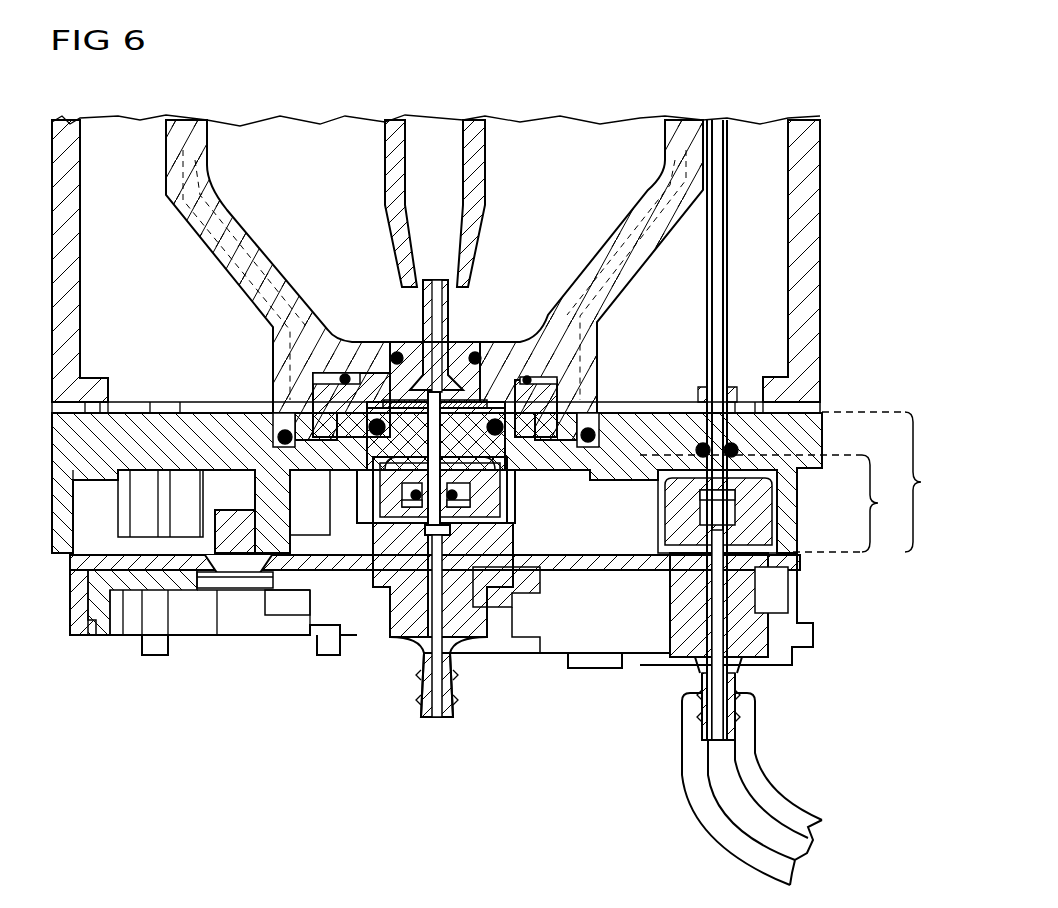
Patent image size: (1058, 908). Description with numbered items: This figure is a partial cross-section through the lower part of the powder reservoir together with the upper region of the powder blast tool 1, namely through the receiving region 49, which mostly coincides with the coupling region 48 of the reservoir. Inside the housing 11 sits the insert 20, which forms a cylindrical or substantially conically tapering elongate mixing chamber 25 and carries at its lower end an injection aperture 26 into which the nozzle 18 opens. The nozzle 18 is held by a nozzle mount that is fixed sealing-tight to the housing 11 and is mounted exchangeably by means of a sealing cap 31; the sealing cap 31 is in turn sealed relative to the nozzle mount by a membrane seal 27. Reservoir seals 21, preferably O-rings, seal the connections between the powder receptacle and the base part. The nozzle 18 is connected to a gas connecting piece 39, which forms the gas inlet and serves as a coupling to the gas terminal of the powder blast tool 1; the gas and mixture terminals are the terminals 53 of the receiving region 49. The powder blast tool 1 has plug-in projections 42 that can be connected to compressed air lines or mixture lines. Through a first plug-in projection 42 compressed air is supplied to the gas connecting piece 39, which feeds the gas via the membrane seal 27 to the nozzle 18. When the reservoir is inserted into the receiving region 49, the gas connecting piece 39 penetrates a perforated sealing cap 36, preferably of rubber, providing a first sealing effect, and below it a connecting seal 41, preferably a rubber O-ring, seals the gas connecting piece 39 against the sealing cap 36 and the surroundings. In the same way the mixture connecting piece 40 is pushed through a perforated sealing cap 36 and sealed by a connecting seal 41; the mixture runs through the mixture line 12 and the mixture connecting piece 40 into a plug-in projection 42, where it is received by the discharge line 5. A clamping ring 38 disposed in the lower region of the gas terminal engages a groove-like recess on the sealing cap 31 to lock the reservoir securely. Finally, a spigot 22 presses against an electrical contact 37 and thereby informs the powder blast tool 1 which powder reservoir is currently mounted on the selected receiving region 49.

The powder blast tool 1 is at (795, 600).
The discharge line 5 is at (705, 810).
The housing 11 is at (812, 184).
The mixture line 12 is at (720, 120).
The nozzle 18 is at (437, 308).
The insert 20 is at (668, 130).
The reservoir seals 21 is at (530, 380).
The spigot 22 is at (235, 510).
The mixing chamber 25 is at (425, 130).
The injection aperture 26 is at (470, 243).
The membrane seal 27 is at (430, 400).
The sealing cap 31 is at (358, 560).
The perforated sealing cap 36 is at (360, 500).
The electrical contact 37 is at (238, 592).
The clamping ring 38 is at (392, 545).
The gas connecting piece 39 is at (445, 485).
The mixture connecting piece 40 is at (720, 505).
The connecting seal 41 is at (455, 505).
The plug-in projections 42 is at (455, 692).
The coupling region 48 is at (889, 482).
The receiving region 49 is at (777, 503).
The terminals 53 is at (508, 572).